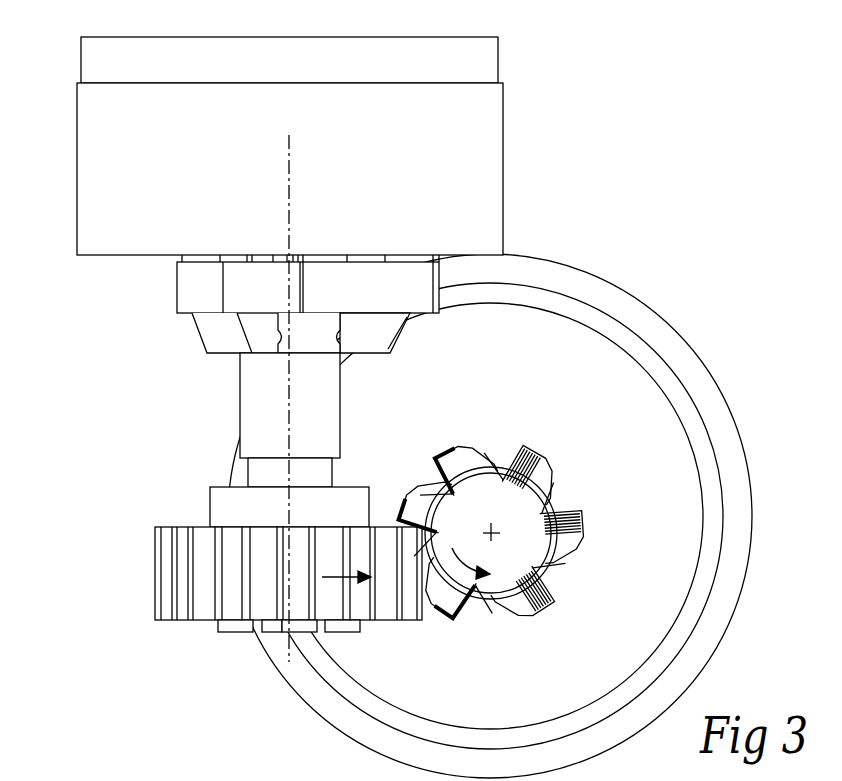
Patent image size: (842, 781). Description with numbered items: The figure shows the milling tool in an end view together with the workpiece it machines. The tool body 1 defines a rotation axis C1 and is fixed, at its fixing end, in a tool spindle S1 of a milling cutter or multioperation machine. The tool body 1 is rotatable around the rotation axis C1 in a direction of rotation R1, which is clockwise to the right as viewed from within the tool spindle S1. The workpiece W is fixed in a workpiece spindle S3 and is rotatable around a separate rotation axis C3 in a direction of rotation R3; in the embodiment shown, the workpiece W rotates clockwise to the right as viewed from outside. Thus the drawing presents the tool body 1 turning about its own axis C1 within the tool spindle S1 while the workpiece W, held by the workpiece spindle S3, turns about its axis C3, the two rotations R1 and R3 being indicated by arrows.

The tool spindle S1 is at (659, 332).
The workpiece spindle S3 is at (107, 157).
The rotation axis C3 is at (288, 203).
The rotation axis C1 is at (495, 522).
The tool body 1 is at (538, 572).
The direction of rotation R1 is at (464, 571).
The direction of rotation R3 is at (343, 580).
The workpiece W is at (163, 547).